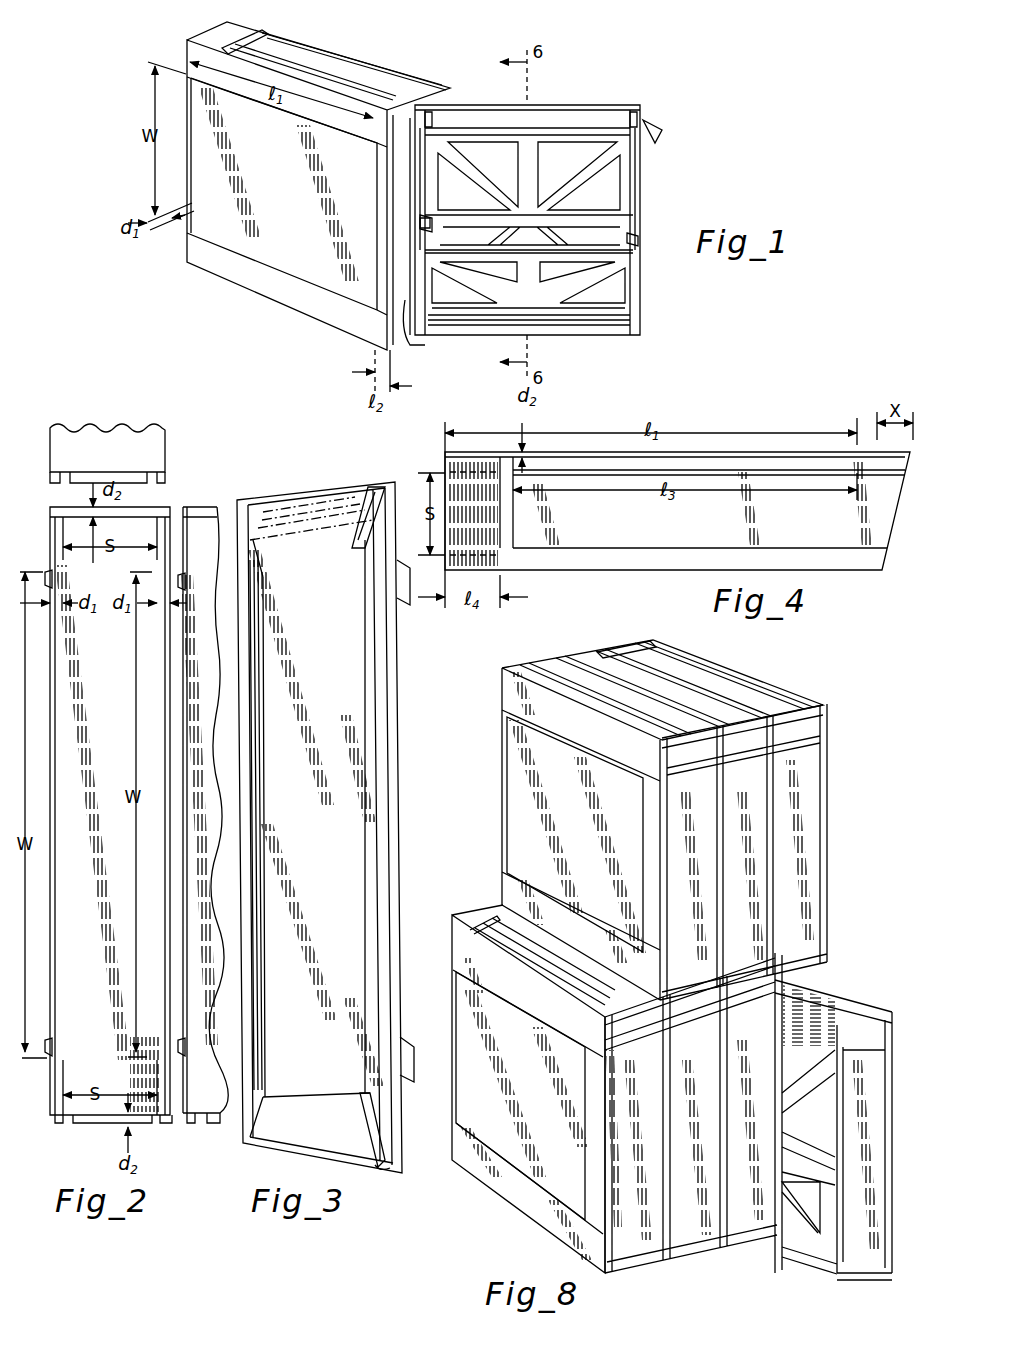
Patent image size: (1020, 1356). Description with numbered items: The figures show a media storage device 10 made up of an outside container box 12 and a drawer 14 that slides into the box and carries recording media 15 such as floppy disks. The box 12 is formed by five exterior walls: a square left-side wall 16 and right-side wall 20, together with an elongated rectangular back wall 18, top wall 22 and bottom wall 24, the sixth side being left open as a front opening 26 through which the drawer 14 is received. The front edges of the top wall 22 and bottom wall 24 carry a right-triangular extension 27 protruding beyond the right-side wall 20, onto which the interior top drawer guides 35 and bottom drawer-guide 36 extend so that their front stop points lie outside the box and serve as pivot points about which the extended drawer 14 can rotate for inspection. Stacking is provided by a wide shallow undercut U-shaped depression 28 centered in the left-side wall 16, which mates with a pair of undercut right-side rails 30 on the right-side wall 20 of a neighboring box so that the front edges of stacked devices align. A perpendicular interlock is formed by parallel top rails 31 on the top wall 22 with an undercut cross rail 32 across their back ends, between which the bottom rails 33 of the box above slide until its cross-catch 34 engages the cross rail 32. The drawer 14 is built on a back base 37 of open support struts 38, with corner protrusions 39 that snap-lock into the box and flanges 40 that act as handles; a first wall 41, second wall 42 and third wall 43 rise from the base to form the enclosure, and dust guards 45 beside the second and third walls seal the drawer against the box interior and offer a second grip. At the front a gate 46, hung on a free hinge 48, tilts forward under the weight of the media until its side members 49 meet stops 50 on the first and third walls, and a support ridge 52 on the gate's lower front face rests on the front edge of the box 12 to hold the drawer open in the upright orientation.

In FIG. 1, the media storage device 10 is at (447, 56).
In FIG. 8, the media storage device 10 is at (480, 1195).
In FIG. 1, the outside container box 12 is at (210, 284).
In FIG. 2, the outside container box 12 is at (176, 1135).
In FIG. 3, the outside container box 12 is at (296, 478).
In FIG. 8, the outside container box 12 is at (555, 1258).
In FIG. 1, the drawer 14 is at (660, 181).
In FIG. 8, the drawer 14 is at (810, 1282).
In FIG. 8, the recording media 15 is at (815, 1010).
In FIG. 1, the left-side wall 16 is at (280, 200).
In FIG. 2, the left-side wall 16 is at (184, 566).
In FIG. 3, the left-side wall 16 is at (258, 1078).
In FIG. 1, the back wall 18 is at (192, 195).
In FIG. 2, the back wall 18 is at (94, 453).
In FIG. 3, the back wall 18 is at (316, 884).
In FIG. 4, the back wall 18 is at (445, 460).
In FIG. 8, the back wall 18 is at (551, 968).
In FIG. 1, the right-side wall 20 is at (408, 247).
In FIG. 2, the right-side wall 20 is at (50, 850).
In FIG. 3, the right-side wall 20 is at (398, 720).
In FIG. 1, the top wall 22 is at (200, 32).
In FIG. 2, the top wall 22 is at (186, 528).
In FIG. 3, the top wall 22 is at (322, 505).
In FIG. 4, the top wall 22 is at (620, 529).
In FIG. 8, the top wall 22 is at (556, 864).
In FIG. 1, the bottom wall 24 is at (302, 312).
In FIG. 2, the bottom wall 24 is at (75, 1123).
In FIG. 3, the bottom wall 24 is at (308, 1128).
In FIG. 8, the bottom wall 24 is at (558, 1066).
In FIG. 1, the front opening 26 is at (422, 345).
In FIG. 1, the triangular extension 27 is at (452, 88).
In FIG. 3, the triangular extension 27 is at (392, 484).
In FIG. 4, the triangular extension 27 is at (897, 516).
In FIG. 8, the triangular extension 27 is at (695, 1252).
In FIG. 1, the U-shaped depression 28 is at (375, 284).
In FIG. 2, the U-shaped depression 28 is at (160, 878).
In FIG. 3, the U-shaped depression 28 is at (318, 778).
In FIG. 8, the U-shaped depression 28 is at (460, 1002).
In FIG. 2, the right-side rails 30 is at (46, 572).
In FIG. 3, the right-side rails 30 is at (410, 585).
In FIG. 4, the right-side rails 30 is at (712, 452).
In FIG. 1, the top rails 31 is at (332, 72).
In FIG. 2, the top rails 31 is at (58, 511).
In FIG. 4, the top rails 31 is at (803, 492).
In FIG. 8, the top rails 31 is at (730, 690).
In FIG. 1, the cross rail 32 is at (264, 33).
In FIG. 2, the cross rail 32 is at (152, 512).
In FIG. 4, the cross rail 32 is at (513, 527).
In FIG. 8, the cross rail 32 is at (648, 648).
In FIG. 2, the bottom rails 33 is at (56, 470).
In FIG. 2, the cross catch 34 is at (212, 1140).
In FIG. 3, the top drawer guides 35 is at (360, 540).
In FIG. 3, the bottom drawer guide 36 is at (358, 1093).
In FIG. 1, the back base 37 is at (589, 104).
In FIG. 1, the support struts 38 is at (524, 196).
In FIG. 1, the protrusions 39 is at (640, 104).
In FIG. 1, the flanges 40 is at (541, 102).
In FIG. 8, the flanges 40 is at (830, 792).
In FIG. 1, the first wall 41 is at (420, 205).
In FIG. 1, the second wall 42 is at (480, 146).
In FIG. 1, the third wall 43 is at (645, 212).
In FIG. 8, the third wall 43 is at (828, 876).
In FIG. 1, the dust guards 45 is at (658, 132).
In FIG. 8, the dust guards 45 is at (830, 741).
In FIG. 1, the gate 46 is at (645, 284).
In FIG. 8, the gate 46 is at (825, 1262).
In FIG. 1, the free hinge 48 is at (640, 338).
In FIG. 1, the side members 49 is at (434, 236).
In FIG. 1, the stops 50 is at (436, 216).
In FIG. 1, the support ridge 52 is at (582, 326).
In FIG. 8, the support ridge 52 is at (792, 1237).